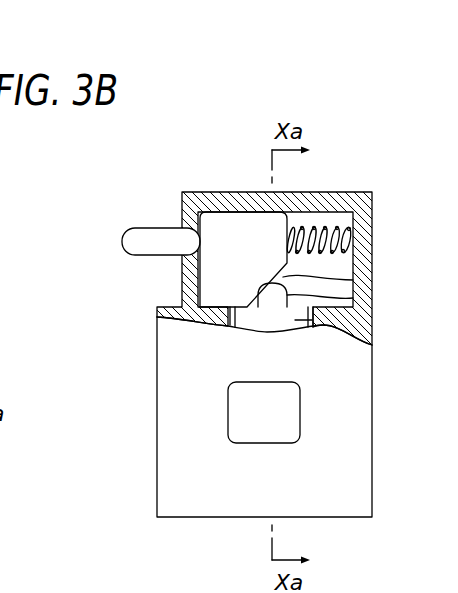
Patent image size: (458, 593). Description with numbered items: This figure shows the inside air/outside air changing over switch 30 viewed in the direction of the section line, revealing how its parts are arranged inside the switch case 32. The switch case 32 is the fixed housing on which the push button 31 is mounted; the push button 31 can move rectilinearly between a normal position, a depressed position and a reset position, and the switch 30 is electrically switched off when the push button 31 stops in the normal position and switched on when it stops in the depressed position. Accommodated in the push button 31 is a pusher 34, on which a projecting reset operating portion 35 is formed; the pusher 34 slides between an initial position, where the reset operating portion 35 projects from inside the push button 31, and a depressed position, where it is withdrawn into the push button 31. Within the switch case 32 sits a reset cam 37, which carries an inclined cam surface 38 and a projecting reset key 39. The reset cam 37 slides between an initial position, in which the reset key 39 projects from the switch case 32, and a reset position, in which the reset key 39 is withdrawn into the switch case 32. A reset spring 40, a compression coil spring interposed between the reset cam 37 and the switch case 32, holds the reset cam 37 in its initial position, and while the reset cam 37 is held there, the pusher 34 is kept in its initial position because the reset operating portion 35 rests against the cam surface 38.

The inside air/outside air changing over switch 30 is at (177, 187).
The push button 31 is at (300, 410).
The switch case 32 is at (176, 517).
The pusher 34 is at (312, 320).
The reset operating portion 35 is at (353, 298).
The reset cam 37 is at (232, 220).
The inclined cam surface 38 is at (353, 280).
The reset key 39 is at (124, 240).
The reset spring 40 is at (326, 232).